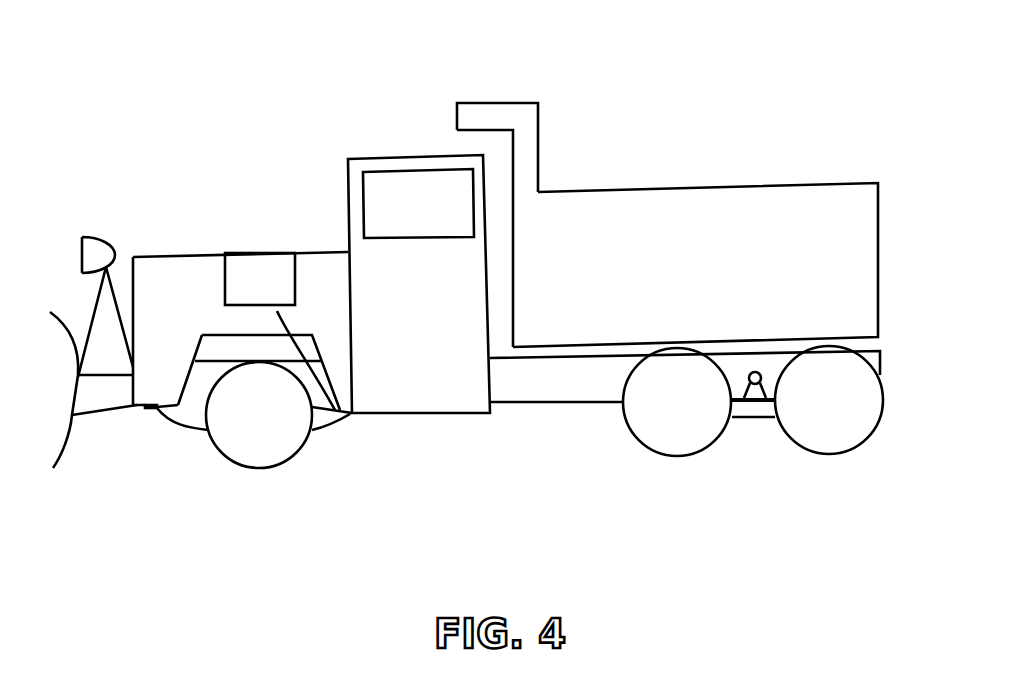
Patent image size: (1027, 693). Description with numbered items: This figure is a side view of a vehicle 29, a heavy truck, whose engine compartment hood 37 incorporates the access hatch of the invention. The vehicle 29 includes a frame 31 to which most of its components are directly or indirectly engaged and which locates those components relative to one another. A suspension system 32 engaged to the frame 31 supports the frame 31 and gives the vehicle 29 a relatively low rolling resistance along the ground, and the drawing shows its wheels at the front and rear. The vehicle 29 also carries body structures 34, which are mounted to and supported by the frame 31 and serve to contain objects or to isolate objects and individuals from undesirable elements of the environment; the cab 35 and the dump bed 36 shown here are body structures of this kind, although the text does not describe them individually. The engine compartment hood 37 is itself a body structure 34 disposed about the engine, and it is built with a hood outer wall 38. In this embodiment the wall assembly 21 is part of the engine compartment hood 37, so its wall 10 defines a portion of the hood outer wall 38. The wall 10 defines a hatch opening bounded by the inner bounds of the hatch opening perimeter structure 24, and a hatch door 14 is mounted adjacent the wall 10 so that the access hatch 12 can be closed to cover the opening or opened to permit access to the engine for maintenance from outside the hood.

The wall 10 is at (188, 263).
The access hatch 12 is at (263, 273).
The hatch door 14 is at (242, 280).
The wall assembly 21 is at (147, 285).
The hatch opening perimeter structure 24 is at (303, 278).
The vehicle 29 is at (405, 100).
The frame 31 is at (560, 385).
The suspension system 32 is at (185, 425).
The body structures 34 is at (165, 267).
The cab 35 is at (406, 270).
The dump bed 36 is at (802, 213).
The engine compartment hood 37 is at (133, 255).
The hood outer wall 38 is at (163, 285).